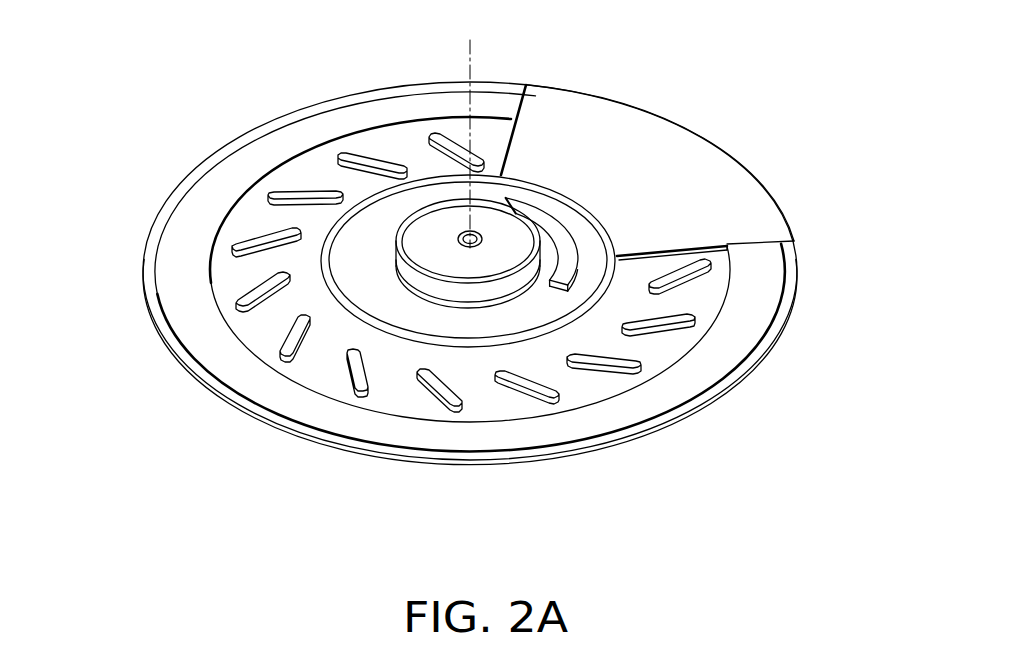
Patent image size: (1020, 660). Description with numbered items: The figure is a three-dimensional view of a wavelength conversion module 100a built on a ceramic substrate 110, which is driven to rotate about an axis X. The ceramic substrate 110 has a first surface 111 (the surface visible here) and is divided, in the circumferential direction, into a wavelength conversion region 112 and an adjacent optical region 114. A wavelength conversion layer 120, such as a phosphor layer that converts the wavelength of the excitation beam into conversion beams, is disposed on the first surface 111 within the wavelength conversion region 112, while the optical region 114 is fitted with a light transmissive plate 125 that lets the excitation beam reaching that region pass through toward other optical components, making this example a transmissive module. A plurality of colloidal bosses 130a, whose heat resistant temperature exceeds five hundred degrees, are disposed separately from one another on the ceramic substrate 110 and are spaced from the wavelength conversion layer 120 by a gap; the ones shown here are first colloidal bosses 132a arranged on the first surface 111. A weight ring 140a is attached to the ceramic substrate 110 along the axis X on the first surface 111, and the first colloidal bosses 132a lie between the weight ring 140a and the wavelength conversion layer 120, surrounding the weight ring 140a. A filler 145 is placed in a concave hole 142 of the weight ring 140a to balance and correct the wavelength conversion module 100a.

The wavelength conversion module 100a is at (477, 276).
The ceramic substrate 110 is at (517, 303).
The first surface 111 is at (525, 404).
The wavelength conversion region 112 is at (756, 292).
The optical region 114 is at (683, 172).
The wavelength conversion layer 120 is at (313, 413).
The light transmissive plate 125 is at (735, 208).
The colloidal bosses 130a is at (471, 220).
The first colloidal bosses 132a is at (433, 132).
The weight ring 140a is at (414, 190).
The concave hole 142 is at (357, 264).
The filler 145 is at (548, 206).